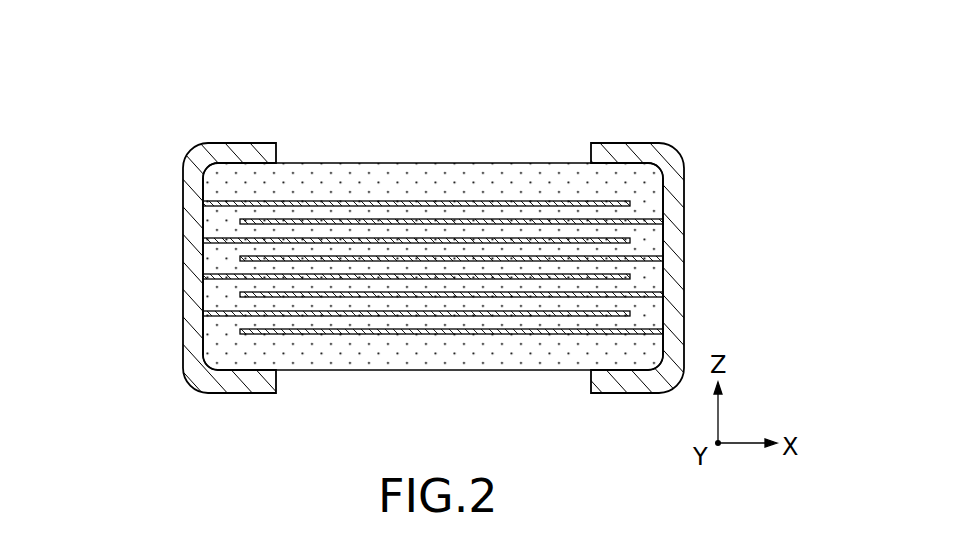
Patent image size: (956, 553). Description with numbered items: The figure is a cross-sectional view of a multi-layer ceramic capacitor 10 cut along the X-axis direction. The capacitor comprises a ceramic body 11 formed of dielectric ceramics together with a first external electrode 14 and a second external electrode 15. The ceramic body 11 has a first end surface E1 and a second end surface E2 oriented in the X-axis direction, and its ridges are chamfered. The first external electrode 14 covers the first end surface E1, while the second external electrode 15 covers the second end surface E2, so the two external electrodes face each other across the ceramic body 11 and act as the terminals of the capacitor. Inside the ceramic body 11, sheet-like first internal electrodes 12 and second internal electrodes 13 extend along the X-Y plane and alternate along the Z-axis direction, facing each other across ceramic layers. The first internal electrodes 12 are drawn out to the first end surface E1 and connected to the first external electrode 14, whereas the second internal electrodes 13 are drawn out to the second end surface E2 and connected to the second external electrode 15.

The multi-layer ceramic capacitor 10 is at (523, 90).
The ceramic body 11 is at (438, 353).
The first internal electrodes 12 is at (203, 313).
The second internal electrodes 13 is at (663, 331).
The first external electrode 14 is at (213, 146).
The second external electrode 15 is at (660, 145).
The first end surface E1 is at (203, 332).
The second end surface E2 is at (663, 192).